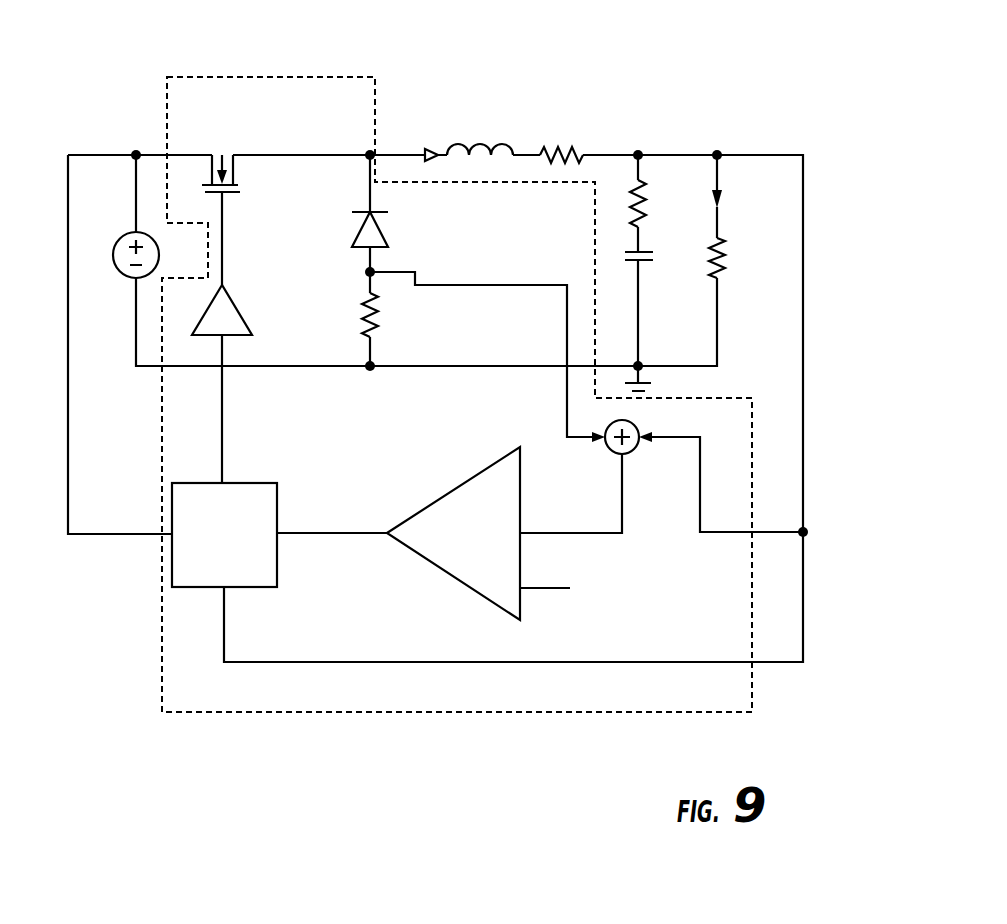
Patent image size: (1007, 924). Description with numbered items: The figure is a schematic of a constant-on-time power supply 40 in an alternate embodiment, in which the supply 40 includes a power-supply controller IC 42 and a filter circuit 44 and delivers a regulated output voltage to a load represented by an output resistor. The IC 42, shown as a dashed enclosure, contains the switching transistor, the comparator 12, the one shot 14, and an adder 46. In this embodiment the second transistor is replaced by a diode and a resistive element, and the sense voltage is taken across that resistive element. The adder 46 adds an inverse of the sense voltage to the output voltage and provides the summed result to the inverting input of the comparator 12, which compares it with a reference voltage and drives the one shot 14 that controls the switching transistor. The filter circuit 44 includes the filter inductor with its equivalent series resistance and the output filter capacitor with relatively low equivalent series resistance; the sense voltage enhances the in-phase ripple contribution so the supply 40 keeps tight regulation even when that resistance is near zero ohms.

The power supply 40 is at (800, 83).
The power-supply controller IC 42 is at (229, 77).
The filter circuit 44 is at (620, 108).
The comparator 12 is at (441, 492).
The one shot 14 is at (265, 483).
The adder 46 is at (637, 451).